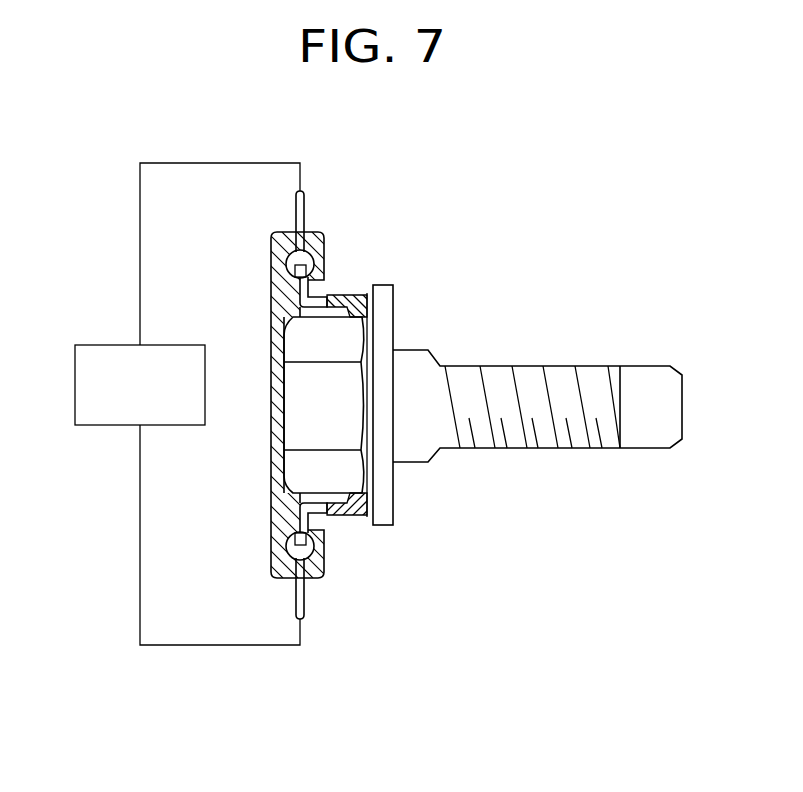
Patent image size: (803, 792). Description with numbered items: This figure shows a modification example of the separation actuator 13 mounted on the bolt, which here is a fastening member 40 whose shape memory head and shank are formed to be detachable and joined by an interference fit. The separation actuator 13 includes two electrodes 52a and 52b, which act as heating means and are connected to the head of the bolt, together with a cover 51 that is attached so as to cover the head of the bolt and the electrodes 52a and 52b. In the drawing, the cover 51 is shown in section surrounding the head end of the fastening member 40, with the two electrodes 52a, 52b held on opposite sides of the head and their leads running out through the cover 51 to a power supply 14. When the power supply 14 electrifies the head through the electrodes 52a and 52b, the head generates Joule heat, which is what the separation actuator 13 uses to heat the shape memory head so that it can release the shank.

The separation actuator 13 is at (326, 206).
The power supply 14 is at (110, 425).
The fastening member 40 is at (586, 222).
The cover 51 is at (270, 295).
The electrode 52a is at (327, 298).
The electrode 52b is at (323, 510).